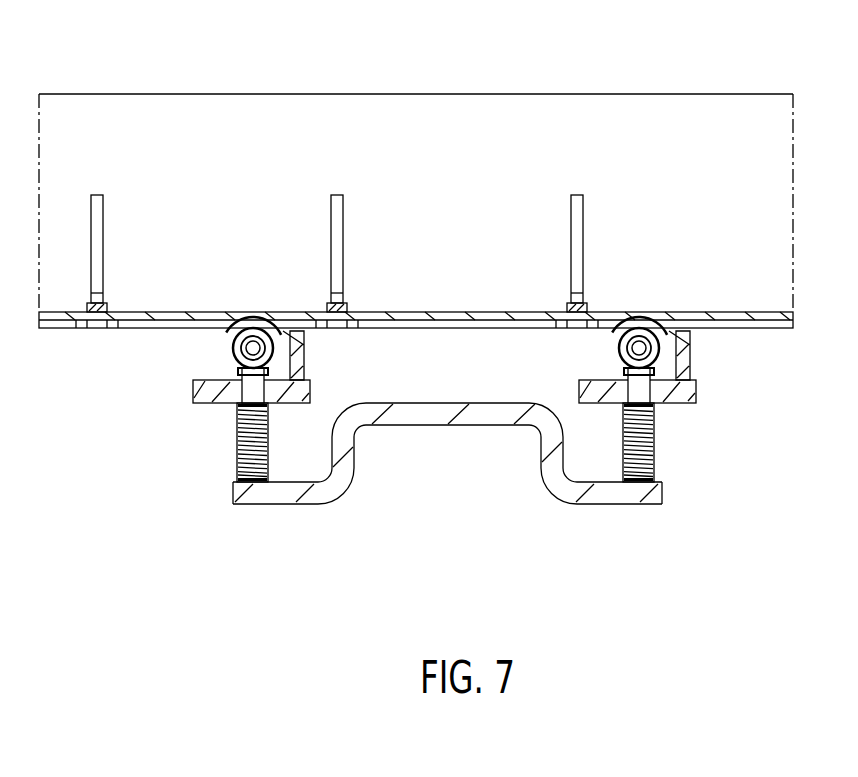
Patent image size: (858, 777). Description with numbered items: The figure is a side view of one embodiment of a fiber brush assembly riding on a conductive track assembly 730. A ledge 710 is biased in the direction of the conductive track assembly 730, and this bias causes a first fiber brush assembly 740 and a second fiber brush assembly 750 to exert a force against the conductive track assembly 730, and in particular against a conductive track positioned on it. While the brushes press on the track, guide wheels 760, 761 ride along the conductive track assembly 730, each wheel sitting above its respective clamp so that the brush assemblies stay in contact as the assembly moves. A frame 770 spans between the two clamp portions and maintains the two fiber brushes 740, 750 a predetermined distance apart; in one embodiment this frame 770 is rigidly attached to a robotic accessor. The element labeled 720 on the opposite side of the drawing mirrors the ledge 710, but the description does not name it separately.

The ledge 710 is at (190, 405).
The second clamp assembly 720 is at (702, 407).
The conductive track assembly 730 is at (770, 313).
The first fiber brush assembly 740 is at (251, 307).
The second fiber brush assembly 750 is at (641, 307).
The guide wheel 760 is at (274, 364).
The guide wheel 761 is at (660, 363).
The frame 770 is at (449, 443).